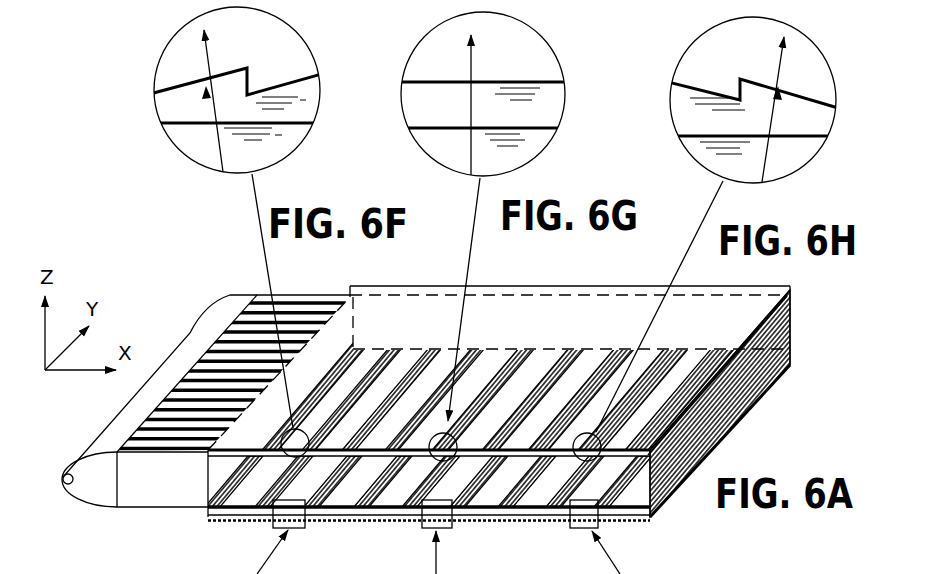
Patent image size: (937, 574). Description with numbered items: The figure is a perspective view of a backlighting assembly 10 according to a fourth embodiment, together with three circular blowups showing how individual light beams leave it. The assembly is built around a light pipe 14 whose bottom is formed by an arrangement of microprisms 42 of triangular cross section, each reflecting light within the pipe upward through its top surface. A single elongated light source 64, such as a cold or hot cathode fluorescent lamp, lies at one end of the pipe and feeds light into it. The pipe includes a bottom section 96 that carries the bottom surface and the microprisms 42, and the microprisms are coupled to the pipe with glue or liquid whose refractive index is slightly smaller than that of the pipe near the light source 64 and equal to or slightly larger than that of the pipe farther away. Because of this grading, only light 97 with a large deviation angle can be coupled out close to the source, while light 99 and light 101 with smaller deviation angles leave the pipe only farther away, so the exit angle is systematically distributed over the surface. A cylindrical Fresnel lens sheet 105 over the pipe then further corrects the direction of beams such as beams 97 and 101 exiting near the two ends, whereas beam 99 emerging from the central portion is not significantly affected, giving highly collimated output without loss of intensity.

In FIG. 6A, the backlighting assembly 10 is at (113, 405).
In FIG. 6F, the light pipe 14 is at (180, 137).
In FIG. 6A, the microprism 42 is at (237, 522).
In FIG. 6A, the light source 64 is at (63, 482).
In FIG. 6A, the bottom section 96 is at (762, 397).
In FIG. 6F, the light beam 97 is at (220, 155).
In FIG. 6G, the light beam 99 is at (467, 152).
In FIG. 6H, the light beam 101 is at (767, 160).
In FIG. 6F, the Fresnel lens sheet 105 is at (180, 105).
In FIG. 6G, the Fresnel lens sheet 105 is at (415, 108).
In FIG. 6H, the Fresnel lens sheet 105 is at (686, 118).
In FIG. 6A, the Fresnel lens sheet 105 is at (780, 312).